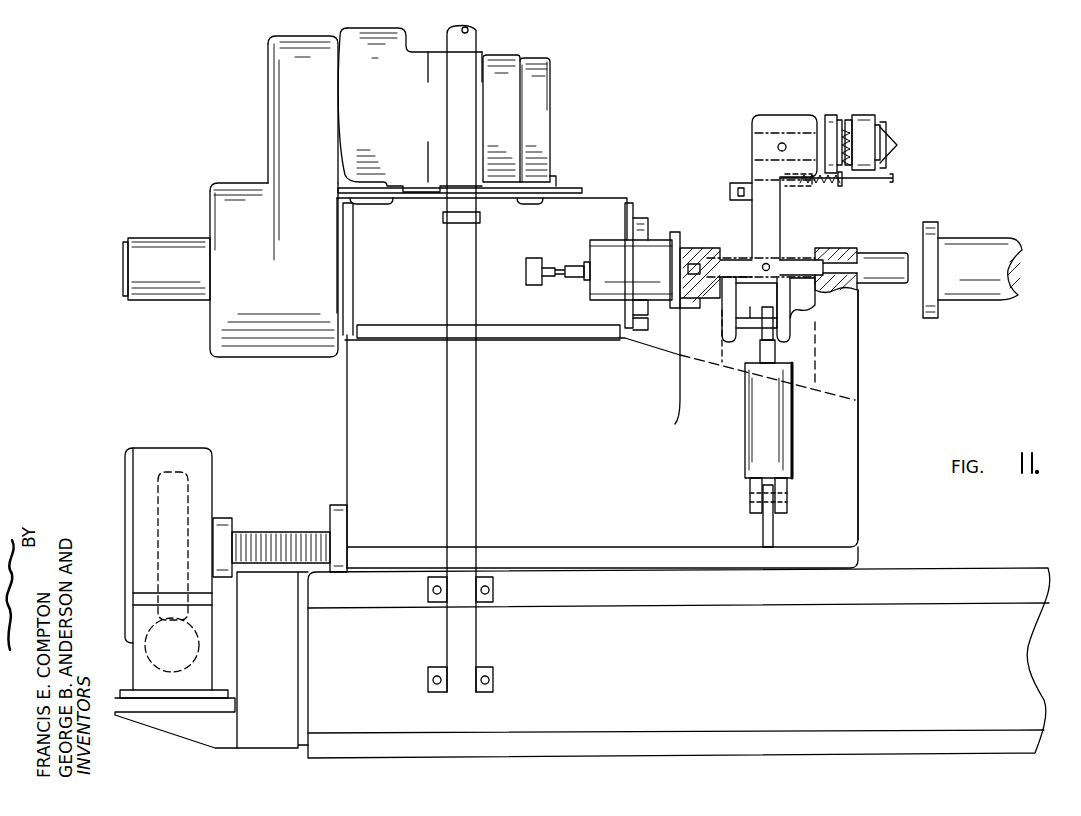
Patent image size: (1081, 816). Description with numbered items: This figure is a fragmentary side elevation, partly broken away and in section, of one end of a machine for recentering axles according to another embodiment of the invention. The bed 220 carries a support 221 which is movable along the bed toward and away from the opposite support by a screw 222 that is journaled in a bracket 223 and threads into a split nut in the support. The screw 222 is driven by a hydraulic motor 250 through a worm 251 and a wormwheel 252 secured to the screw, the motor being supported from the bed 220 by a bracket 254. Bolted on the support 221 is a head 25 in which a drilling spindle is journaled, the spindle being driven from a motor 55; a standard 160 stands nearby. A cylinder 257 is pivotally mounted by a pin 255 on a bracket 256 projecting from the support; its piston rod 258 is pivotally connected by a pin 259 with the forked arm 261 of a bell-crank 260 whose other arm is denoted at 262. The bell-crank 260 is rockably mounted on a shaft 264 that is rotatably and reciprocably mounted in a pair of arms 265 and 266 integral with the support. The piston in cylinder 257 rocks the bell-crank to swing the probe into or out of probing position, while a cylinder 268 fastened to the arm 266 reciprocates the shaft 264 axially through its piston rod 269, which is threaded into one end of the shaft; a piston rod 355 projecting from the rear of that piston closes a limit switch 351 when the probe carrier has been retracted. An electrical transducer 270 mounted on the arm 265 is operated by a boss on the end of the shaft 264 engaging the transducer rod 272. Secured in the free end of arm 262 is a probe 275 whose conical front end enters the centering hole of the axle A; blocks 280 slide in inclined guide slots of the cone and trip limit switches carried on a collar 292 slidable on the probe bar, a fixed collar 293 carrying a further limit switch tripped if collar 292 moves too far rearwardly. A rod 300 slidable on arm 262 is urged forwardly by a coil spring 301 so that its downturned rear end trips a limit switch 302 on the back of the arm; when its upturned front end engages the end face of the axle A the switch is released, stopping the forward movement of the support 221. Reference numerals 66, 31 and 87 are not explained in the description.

The bed 220 is at (688, 722).
The support 221 is at (347, 442).
The head 25 is at (594, 207).
The gear box 66 is at (268, 108).
The motor 55 is at (528, 68).
The standard 160 is at (474, 290).
The plate 31 is at (630, 208).
The bracket 87 is at (643, 226).
The cylinder 268 is at (600, 243).
The limit switch 351 is at (540, 288).
The piston rod 355 is at (571, 280).
The piston rod 269 is at (684, 246).
The bell-crank arm 262 is at (754, 232).
The limit switch 302 is at (732, 200).
The bell-crank 260 is at (794, 237).
The shaft 264 is at (798, 260).
The transducer rod 272 is at (845, 250).
The electrical transducer 270 is at (880, 257).
The axle A is at (979, 244).
The arm 265 is at (852, 307).
The forked arm 261 is at (808, 318).
The pin 259 is at (756, 305).
The piston rod 258 is at (775, 352).
The cylinder 257 is at (794, 437).
The pin 255 is at (749, 498).
The bracket 256 is at (775, 528).
The arm 266 is at (684, 320).
The collar 293 is at (822, 126).
The probe 275 is at (857, 95).
The collar 292 is at (869, 116).
The block 280 is at (883, 141).
The rod 300 is at (880, 183).
The coil spring 301 is at (828, 185).
The bracket 223 is at (206, 466).
The wormwheel 252 is at (156, 522).
The hydraulic motor 250 is at (142, 660).
The worm 251 is at (166, 672).
The bracket 254 is at (186, 730).
The screw 222 is at (268, 534).